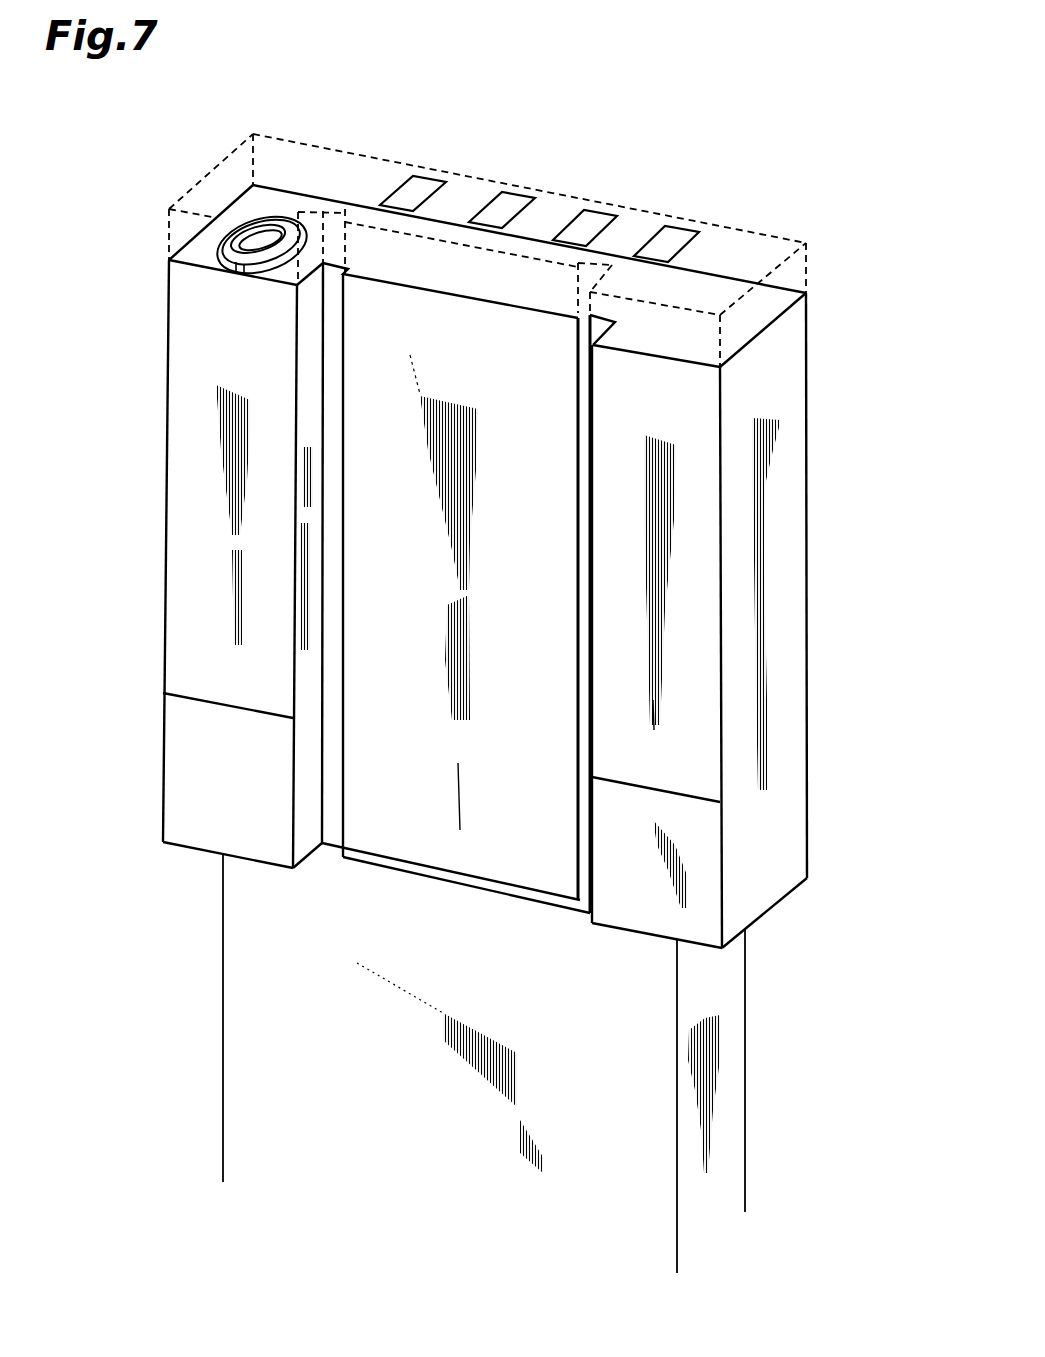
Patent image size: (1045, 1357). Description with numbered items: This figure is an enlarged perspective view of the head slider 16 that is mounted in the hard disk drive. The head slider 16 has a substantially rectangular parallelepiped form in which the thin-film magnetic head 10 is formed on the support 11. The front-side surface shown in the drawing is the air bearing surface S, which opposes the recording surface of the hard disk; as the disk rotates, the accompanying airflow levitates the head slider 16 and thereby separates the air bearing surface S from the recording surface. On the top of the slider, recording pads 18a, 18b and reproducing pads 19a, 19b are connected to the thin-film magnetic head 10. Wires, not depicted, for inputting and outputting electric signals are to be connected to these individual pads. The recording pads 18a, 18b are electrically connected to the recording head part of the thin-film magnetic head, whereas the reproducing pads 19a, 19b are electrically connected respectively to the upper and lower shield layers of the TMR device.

The thin-film magnetic head 10 is at (221, 178).
The head slider 16 is at (840, 437).
The support 11 is at (782, 617).
The air bearing surface S is at (192, 470).
The reproducing pad 19a is at (425, 187).
The reproducing pad 19b is at (510, 198).
The recording pad 18a is at (592, 217).
The recording pad 18b is at (678, 233).